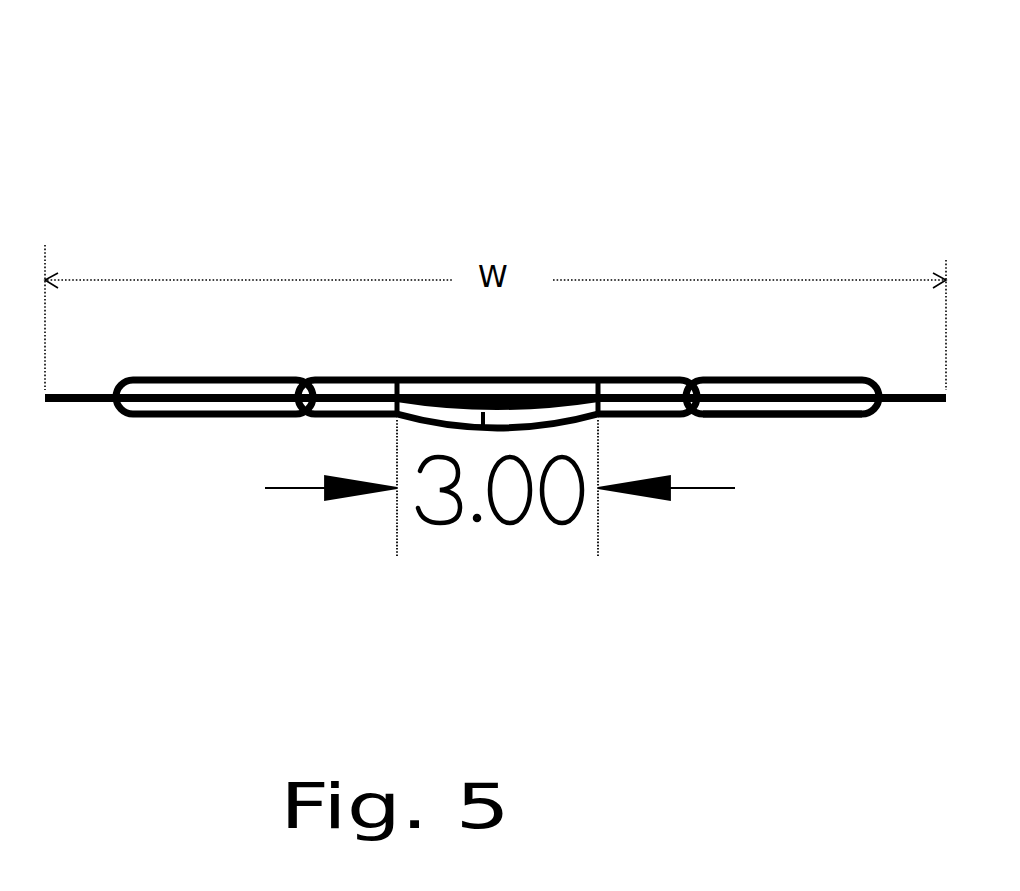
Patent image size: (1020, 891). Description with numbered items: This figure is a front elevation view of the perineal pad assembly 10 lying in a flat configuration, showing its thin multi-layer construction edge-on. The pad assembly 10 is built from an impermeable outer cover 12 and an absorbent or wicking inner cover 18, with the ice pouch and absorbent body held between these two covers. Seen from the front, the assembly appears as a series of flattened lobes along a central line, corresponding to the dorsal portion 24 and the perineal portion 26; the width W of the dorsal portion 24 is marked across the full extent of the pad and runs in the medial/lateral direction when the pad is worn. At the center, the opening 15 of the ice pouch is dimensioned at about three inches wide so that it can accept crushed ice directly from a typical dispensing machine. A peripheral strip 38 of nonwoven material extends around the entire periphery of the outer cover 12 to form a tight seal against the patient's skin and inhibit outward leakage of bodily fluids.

The perineal pad assembly 10 is at (761, 116).
The outer cover 12 is at (770, 418).
The opening 15 is at (545, 390).
The inner cover 18 is at (756, 385).
The dorsal portion 24 is at (196, 405).
The perineal portion 26 is at (366, 384).
The peripheral strip 38 is at (915, 405).